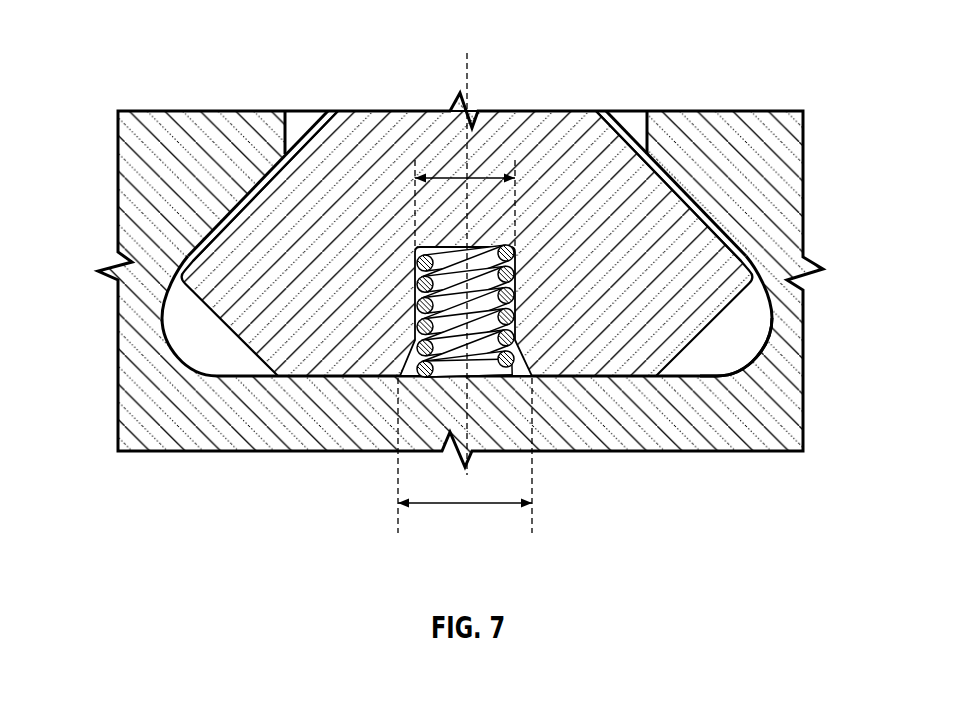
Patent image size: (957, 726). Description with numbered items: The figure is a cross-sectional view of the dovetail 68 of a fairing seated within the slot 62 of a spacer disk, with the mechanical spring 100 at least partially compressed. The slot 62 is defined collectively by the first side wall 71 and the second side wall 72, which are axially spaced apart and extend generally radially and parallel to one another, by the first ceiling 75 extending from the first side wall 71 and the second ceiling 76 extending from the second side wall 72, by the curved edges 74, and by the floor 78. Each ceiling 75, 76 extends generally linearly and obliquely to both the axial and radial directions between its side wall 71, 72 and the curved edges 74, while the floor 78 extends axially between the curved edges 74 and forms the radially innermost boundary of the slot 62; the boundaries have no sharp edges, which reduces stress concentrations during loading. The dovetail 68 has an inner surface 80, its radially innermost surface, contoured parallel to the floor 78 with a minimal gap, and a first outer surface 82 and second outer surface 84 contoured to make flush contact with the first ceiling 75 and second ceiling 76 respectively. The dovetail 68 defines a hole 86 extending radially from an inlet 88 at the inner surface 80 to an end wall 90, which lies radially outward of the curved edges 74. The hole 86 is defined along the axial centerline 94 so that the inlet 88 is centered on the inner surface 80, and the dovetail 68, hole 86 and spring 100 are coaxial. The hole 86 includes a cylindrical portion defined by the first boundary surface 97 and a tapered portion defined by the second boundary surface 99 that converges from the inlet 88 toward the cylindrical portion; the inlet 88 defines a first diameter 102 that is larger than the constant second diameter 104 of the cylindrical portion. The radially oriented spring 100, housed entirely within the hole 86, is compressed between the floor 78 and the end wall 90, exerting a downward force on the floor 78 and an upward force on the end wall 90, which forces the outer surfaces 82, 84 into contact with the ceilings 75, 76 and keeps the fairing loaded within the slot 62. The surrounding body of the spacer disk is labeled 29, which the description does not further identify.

The housing 29 is at (152, 412).
The slot 62 is at (722, 357).
The dovetail 68 is at (727, 284).
The first side wall 71 is at (282, 132).
The second side wall 72 is at (650, 132).
The curved edges 74 is at (763, 330).
The first ceiling 75 is at (225, 218).
The second ceiling 76 is at (700, 217).
The floor 78 is at (605, 378).
The inner surface 80 is at (318, 373).
The first outer surface 82 is at (213, 233).
The second outer surface 84 is at (678, 198).
The hole 86 is at (518, 375).
The inlet 88 is at (406, 374).
The end wall 90 is at (468, 350).
The axial centerline 94 is at (467, 75).
The first boundary surface 97 is at (518, 283).
The second boundary surface 99 is at (528, 350).
The mechanical spring 100 is at (525, 317).
The first diameter 102 is at (470, 505).
The second diameter 104 is at (443, 178).